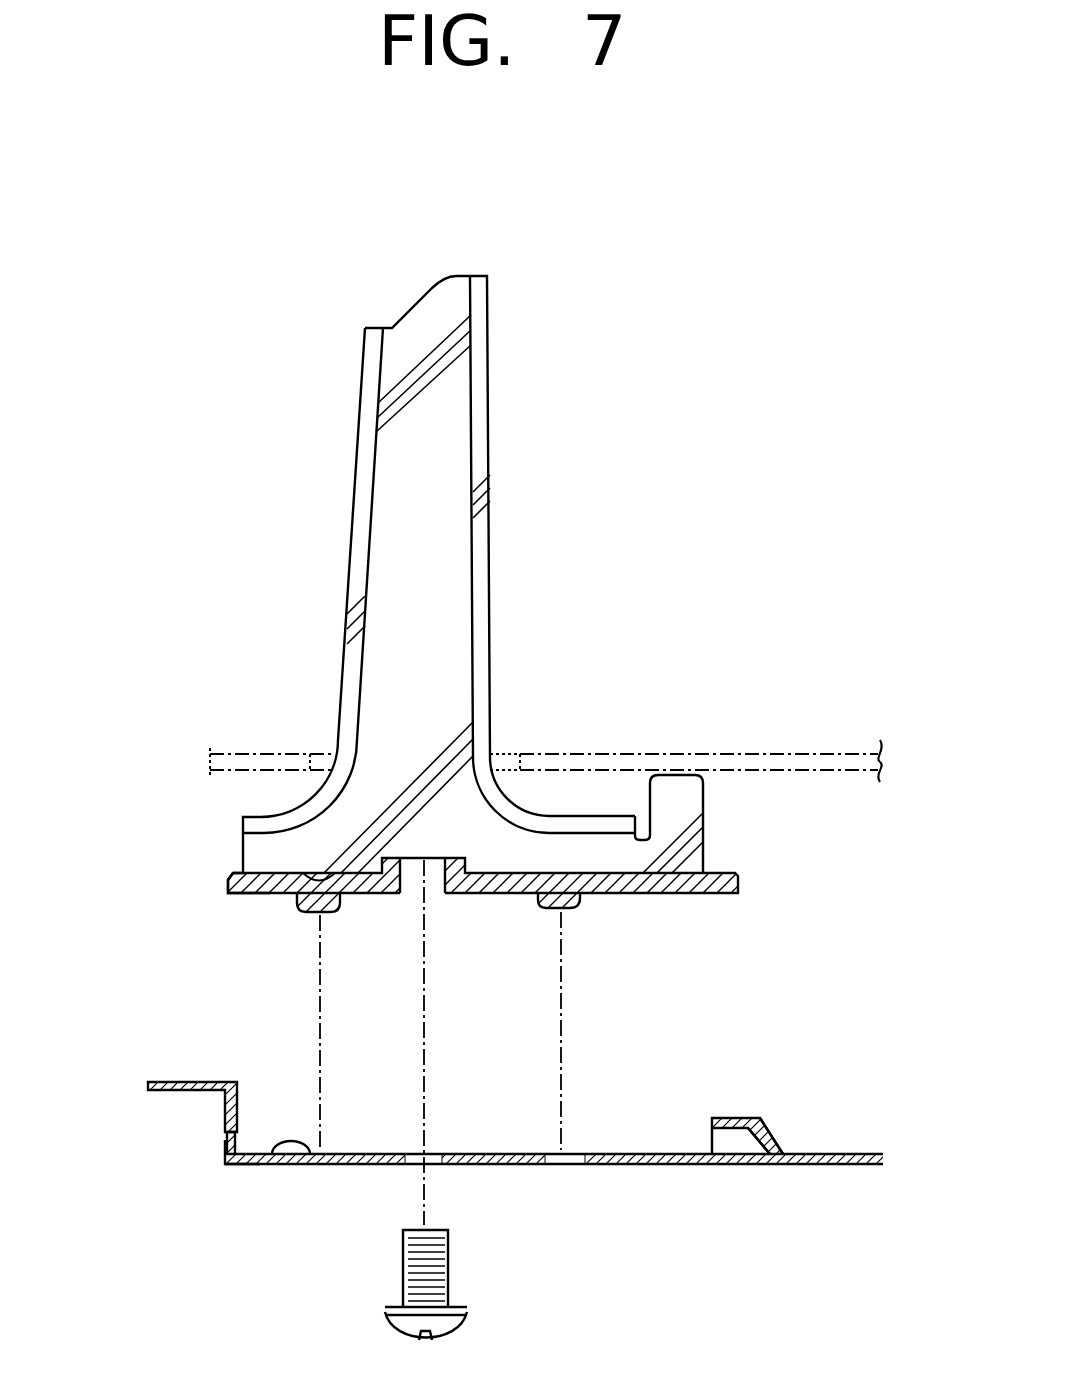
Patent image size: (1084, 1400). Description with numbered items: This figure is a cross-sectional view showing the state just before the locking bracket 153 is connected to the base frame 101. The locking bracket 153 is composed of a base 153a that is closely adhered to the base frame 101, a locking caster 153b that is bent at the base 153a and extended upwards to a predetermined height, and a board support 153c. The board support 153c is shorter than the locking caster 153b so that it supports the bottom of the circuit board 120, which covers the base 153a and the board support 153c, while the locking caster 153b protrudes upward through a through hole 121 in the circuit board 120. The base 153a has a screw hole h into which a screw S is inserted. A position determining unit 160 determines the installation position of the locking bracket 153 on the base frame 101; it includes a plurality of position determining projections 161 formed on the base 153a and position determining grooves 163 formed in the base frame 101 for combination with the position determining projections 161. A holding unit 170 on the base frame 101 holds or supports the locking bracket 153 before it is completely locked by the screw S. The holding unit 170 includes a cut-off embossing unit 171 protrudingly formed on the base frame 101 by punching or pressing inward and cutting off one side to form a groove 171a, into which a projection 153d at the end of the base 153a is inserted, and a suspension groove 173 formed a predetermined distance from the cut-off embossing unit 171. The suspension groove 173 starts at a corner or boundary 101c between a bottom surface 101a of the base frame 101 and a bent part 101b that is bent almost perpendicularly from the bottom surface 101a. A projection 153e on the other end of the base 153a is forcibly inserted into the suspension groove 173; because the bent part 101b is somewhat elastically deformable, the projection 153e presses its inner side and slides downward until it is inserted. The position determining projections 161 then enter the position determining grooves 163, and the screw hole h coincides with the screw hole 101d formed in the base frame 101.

The locking bracket 153 is at (534, 445).
The base 153a is at (255, 895).
The locking caster 153b is at (387, 486).
The board support 153c is at (705, 795).
The projection 153d is at (539, 917).
The projection 153e is at (230, 880).
The screw hole h is at (422, 880).
The position determining unit 160 is at (619, 949).
The position determining projections 161 is at (570, 912).
The circuit board 120 is at (546, 717).
The through hole 121 is at (513, 770).
The base frame 101 is at (564, 1206).
The bottom surface 101a is at (305, 1160).
The bent part 101b is at (222, 1107).
The corner or boundary 101c is at (225, 1168).
The screw hole 101d is at (442, 1162).
The position determining grooves 163 is at (565, 1162).
The holding unit 170 is at (787, 1133).
The cut-off embossing unit 171 is at (760, 1117).
The groove 171a is at (742, 1140).
The suspension groove 173 is at (223, 1145).
The screw S is at (403, 1283).